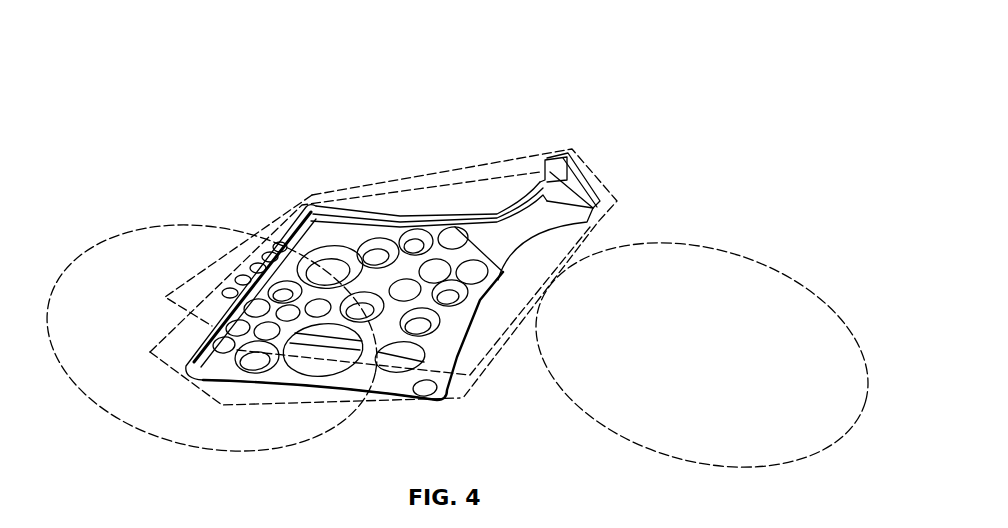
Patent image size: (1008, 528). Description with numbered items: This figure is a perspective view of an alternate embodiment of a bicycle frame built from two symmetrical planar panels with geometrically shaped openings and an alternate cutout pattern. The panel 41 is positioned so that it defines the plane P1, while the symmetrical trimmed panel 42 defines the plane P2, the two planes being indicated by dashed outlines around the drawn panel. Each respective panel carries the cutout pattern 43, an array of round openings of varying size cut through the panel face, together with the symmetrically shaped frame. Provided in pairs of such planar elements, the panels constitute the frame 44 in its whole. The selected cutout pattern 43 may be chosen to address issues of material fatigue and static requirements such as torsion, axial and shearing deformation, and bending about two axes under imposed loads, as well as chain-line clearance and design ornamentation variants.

The panel 41 is at (403, 387).
The symmetrical trimmed panel 42 is at (342, 213).
The cutout pattern 43 is at (280, 372).
The frame 44 is at (656, 154).
The plane P1 is at (597, 172).
The plane P2 is at (312, 194).